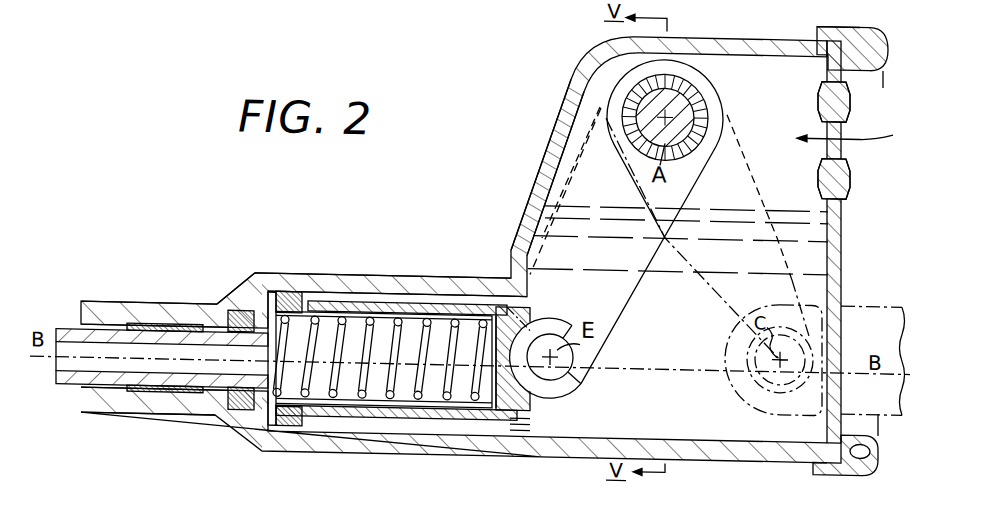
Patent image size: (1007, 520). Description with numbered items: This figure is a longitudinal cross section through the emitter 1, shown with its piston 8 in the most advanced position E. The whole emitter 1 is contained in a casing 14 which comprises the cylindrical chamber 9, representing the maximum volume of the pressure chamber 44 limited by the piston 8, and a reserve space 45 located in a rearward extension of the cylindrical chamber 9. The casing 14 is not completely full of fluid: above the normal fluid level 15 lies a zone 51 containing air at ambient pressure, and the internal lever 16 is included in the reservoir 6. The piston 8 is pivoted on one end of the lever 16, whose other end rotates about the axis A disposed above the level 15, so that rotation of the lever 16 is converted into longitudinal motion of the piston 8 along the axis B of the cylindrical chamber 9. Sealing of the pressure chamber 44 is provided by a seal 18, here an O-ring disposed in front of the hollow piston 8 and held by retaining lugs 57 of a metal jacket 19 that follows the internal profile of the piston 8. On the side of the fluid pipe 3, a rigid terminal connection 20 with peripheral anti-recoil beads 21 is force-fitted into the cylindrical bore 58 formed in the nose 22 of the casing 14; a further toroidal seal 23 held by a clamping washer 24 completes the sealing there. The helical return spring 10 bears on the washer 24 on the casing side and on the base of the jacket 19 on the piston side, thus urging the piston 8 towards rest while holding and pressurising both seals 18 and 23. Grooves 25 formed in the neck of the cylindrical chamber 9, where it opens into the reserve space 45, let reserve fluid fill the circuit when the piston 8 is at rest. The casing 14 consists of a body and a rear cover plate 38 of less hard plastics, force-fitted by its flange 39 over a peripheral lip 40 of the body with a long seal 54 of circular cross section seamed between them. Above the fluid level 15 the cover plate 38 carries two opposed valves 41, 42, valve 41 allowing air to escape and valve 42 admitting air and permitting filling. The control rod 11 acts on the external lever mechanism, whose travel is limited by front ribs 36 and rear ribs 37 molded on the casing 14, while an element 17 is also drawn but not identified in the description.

The emitter 1 is at (484, 174).
The fluid pipe 3 is at (70, 397).
The reservoir 6 is at (851, 131).
The piston 8 is at (405, 300).
The cylindrical chamber 9 is at (378, 426).
The helical return spring 10 is at (463, 291).
The control rod 11 is at (863, 299).
The casing 14 is at (713, 36).
The normal fluid level 15 is at (838, 208).
The internal lever 16 is at (623, 290).
The top wall of housing 17 is at (348, 293).
The seal 18 is at (281, 276).
The metal jacket 19 is at (318, 282).
The terminal connection 20 is at (177, 392).
The anti-recoil beads 21 is at (135, 397).
The nose 22 is at (145, 316).
The toroidal seal 23 is at (247, 313).
The clamping washer 24 is at (238, 422).
The grooves 25 is at (523, 437).
The front ribs 36 is at (578, 157).
The rear ribs 37 is at (745, 138).
The rear cover plate 38 is at (846, 250).
The flange 39 is at (843, 19).
The peripheral lip 40 is at (842, 468).
The valve 41 is at (850, 92).
The valve 42 is at (850, 173).
The pressure chamber 44 is at (257, 428).
The reserve space 45 is at (733, 418).
The zone containing air 51 is at (577, 136).
The long seal 54 is at (863, 30).
The retaining lugs 57 is at (267, 285).
The cylindrical bore 58 is at (110, 331).